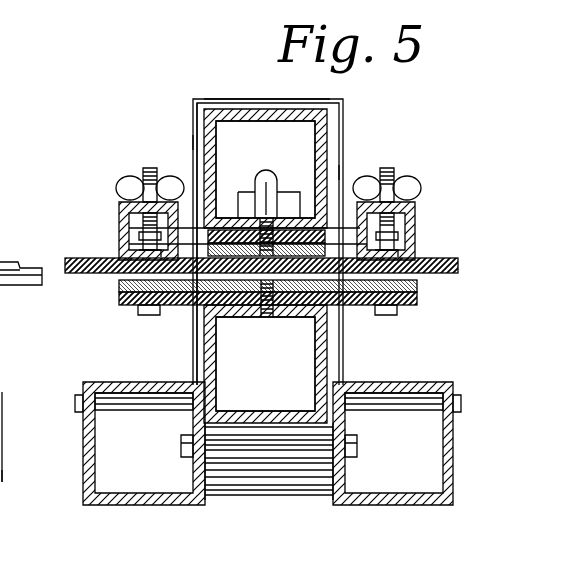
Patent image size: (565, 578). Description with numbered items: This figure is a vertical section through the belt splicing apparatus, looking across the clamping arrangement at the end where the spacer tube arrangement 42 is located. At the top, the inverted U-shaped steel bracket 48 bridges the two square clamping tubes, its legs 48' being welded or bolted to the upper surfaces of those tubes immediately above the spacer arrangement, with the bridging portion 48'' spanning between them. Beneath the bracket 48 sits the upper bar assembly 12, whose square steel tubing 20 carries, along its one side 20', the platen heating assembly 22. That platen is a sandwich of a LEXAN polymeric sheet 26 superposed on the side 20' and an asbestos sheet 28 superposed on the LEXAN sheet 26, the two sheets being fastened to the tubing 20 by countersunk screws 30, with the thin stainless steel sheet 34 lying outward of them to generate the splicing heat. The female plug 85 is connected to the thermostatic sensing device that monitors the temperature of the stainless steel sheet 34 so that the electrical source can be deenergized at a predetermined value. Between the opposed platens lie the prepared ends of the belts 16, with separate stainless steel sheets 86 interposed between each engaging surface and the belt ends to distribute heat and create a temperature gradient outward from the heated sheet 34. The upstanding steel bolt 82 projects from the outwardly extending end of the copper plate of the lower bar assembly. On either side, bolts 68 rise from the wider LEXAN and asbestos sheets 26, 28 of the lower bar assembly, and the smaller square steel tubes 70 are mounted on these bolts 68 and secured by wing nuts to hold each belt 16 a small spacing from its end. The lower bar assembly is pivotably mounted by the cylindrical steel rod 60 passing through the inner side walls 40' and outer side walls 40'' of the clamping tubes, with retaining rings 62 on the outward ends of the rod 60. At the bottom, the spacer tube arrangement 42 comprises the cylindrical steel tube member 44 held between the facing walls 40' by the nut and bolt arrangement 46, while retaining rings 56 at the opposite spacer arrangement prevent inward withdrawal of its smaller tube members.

The U-shaped steel bracket 48 is at (246, 235).
The legs of the U-shaped bracket 48' is at (261, 152).
The frame top member 48'' is at (267, 84).
The bar assembly 12 is at (204, 148).
The square steel tubing 20 is at (297, 263).
The side of the tubing 20' is at (303, 266).
The countersunk screws 30 is at (256, 188).
The female plug 85 is at (290, 200).
The platen heating assembly 22 is at (258, 238).
The stainless steel sheets 86 is at (208, 248).
The belts 16 is at (63, 266).
The upstanding steel bolt 82 is at (8, 284).
The longitudinal square steel tubes 70 is at (120, 205).
The bolts 68 is at (146, 168).
The LEXAN polymeric sheet 26 is at (396, 233).
The asbestos sheet 28 is at (398, 253).
The stainless steel sheet 34 is at (168, 228).
The inner facing side walls of the tubes 40' is at (268, 475).
The outer side walls of the tubes 40'' is at (244, 457).
The spacer tube arrangement 42 is at (270, 495).
The cylindrical steel tube member 44 is at (320, 449).
The nut and bolt arrangement 46 is at (357, 446).
The cylindrical steel rod 60 is at (160, 406).
The retaining rings 62 is at (2, 394).
The retaining rings 56 is at (2, 482).